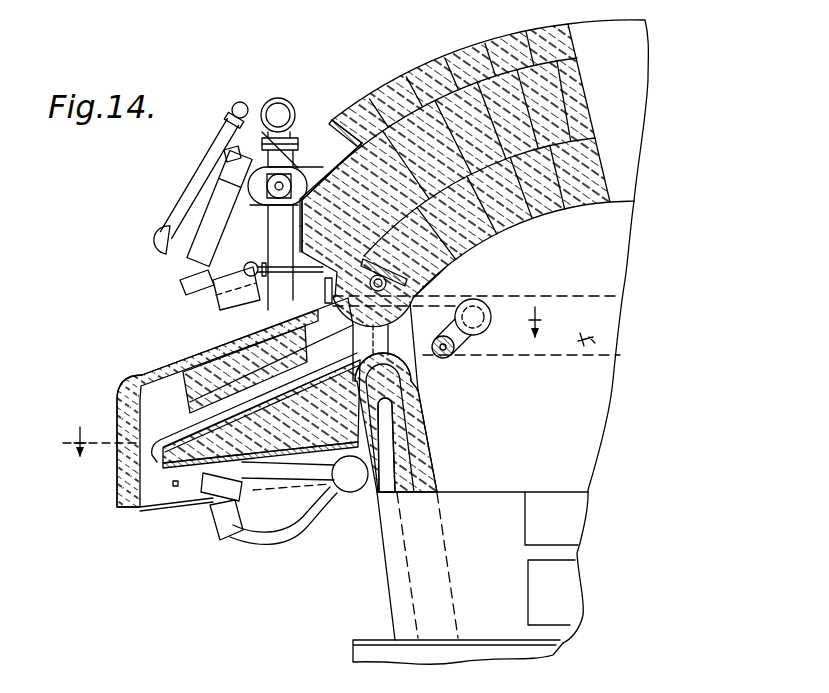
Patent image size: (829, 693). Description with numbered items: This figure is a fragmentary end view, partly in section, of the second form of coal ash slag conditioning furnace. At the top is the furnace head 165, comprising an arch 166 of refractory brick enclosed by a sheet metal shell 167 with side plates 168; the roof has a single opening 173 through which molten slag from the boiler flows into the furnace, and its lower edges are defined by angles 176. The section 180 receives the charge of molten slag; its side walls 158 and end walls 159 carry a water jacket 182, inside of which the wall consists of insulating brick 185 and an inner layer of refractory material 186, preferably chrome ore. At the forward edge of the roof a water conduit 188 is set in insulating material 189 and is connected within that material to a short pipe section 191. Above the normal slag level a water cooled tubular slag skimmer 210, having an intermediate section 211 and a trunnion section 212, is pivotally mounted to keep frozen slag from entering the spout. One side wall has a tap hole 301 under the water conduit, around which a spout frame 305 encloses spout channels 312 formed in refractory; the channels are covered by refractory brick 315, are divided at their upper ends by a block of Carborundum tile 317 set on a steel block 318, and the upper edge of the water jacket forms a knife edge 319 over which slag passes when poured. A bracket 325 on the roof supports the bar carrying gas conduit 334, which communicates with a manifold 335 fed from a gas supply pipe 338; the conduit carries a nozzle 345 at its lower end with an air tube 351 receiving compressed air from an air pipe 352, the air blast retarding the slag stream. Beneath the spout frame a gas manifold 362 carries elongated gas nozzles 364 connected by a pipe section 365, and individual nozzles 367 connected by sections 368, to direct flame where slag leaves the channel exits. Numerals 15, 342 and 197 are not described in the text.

The furnace head 165 is at (523, 25).
The arch 166 is at (384, 90).
The sheet metal shell 167 is at (330, 118).
The side plates 168 is at (334, 166).
The opening 173 is at (620, 37).
The angles 176 is at (323, 263).
The short pipe section 191 is at (340, 218).
The bracket 325 is at (321, 186).
The gas supply pipe 338 is at (288, 287).
The water conduit 188 is at (428, 294).
The insulating material 189 is at (432, 296).
The slag skimmer 210 is at (489, 337).
The trunnion section 212 is at (489, 313).
The intermediate section 211 is at (455, 358).
The Carborundum tile block 317 is at (456, 318).
The section line 15 is at (313, 382).
The slag receiving section 180 is at (578, 406).
The end walls 159 is at (462, 550).
The side walls 158 is at (371, 523).
The refractory material layer 186 is at (430, 438).
The tap hole 301 is at (407, 362).
The insulating brick 185 is at (400, 422).
The water jacket 182 is at (384, 473).
The spout frame 305 is at (136, 372).
The refractory brick 315 is at (190, 390).
The bar 342 is at (277, 327).
The knife edge 319 is at (343, 388).
The spout channels 312 is at (300, 412).
The steel block 318 is at (318, 410).
The elongated gas nozzles 364 is at (218, 492).
The pipe section 365 is at (285, 487).
The gas manifold 362 is at (358, 479).
The individual nozzles 367 is at (227, 529).
The sections 368 is at (300, 522).
The manifold 335 is at (287, 100).
The pipe fitting 197 is at (250, 263).
The air pipe 352 is at (200, 177).
The gas conduit 334 is at (220, 212).
The air tube 351 is at (213, 290).
The nozzle 345 is at (236, 300).